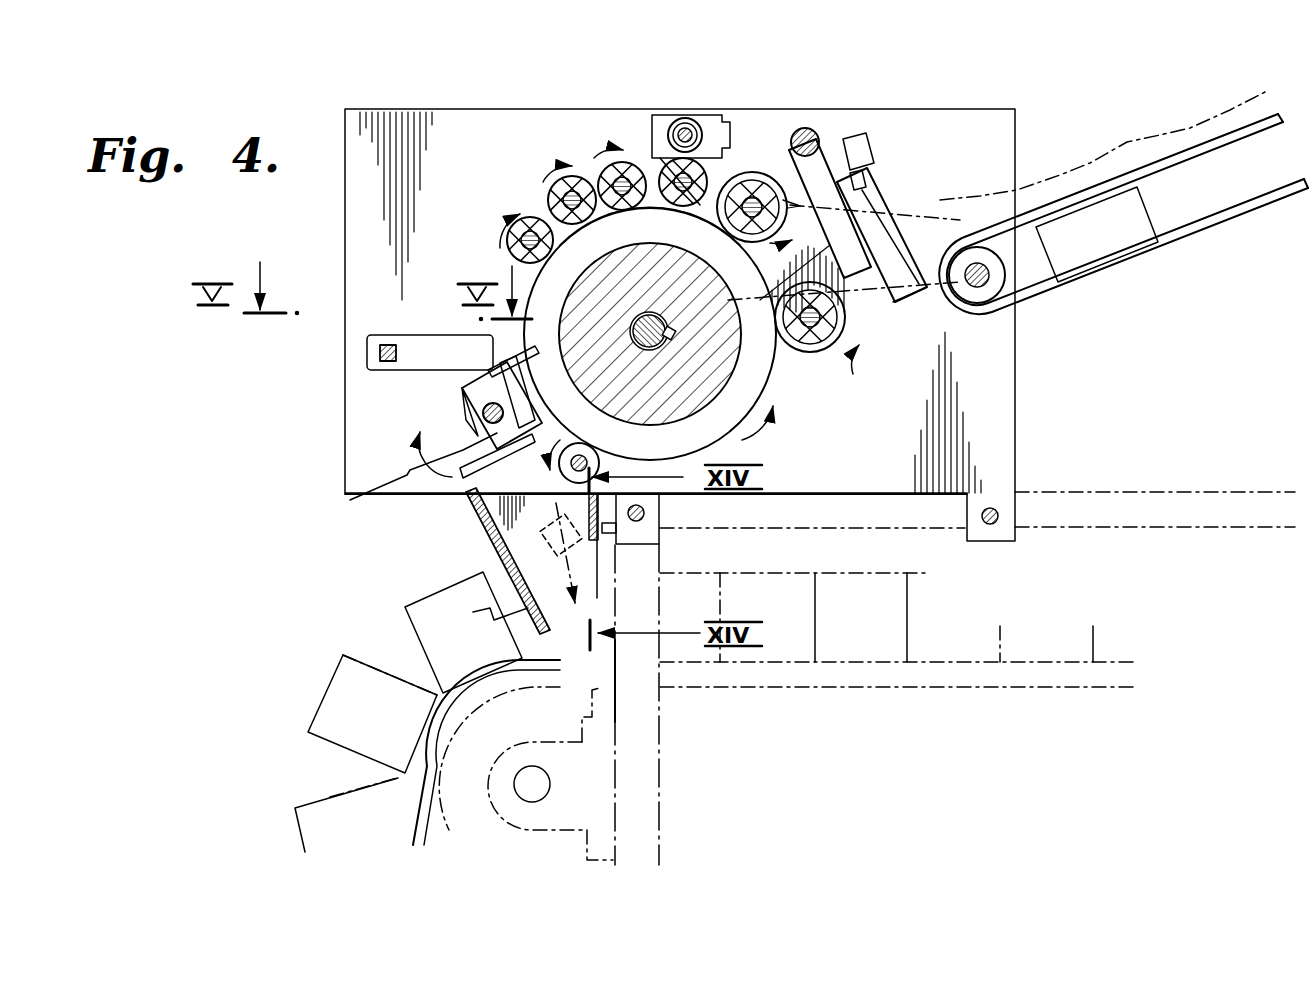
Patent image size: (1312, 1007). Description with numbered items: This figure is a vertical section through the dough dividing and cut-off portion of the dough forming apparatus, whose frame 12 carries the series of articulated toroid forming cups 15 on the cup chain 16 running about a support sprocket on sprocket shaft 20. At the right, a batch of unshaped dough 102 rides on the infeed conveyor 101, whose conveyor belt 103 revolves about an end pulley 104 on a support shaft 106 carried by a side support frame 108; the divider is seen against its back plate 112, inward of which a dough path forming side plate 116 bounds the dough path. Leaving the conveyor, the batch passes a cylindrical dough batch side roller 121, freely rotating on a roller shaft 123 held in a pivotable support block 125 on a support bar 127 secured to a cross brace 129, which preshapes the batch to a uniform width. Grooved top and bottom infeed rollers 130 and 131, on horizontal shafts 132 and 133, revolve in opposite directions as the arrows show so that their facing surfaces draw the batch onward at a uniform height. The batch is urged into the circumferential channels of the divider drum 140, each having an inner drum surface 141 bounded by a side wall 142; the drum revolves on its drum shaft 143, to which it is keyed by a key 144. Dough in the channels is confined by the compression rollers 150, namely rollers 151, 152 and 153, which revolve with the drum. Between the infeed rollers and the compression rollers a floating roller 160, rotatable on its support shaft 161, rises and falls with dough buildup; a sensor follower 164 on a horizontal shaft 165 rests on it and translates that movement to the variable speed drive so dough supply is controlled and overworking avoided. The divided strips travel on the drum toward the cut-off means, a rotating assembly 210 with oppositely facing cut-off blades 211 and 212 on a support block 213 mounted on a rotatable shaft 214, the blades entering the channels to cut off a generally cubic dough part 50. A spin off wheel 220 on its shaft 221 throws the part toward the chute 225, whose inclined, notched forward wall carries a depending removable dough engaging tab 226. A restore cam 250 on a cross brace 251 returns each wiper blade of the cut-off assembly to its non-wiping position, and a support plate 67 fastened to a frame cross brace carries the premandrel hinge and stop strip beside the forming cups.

The frame 12 is at (645, 802).
The articulated toroid forming segmented tubular cups 15 is at (345, 770).
The cup chain 16 is at (1037, 688).
The sprocket shaft 20 is at (520, 797).
The dough part 50 is at (543, 502).
The support plate 67 is at (634, 545).
The infeed conveyor 101 is at (1050, 186).
The dough batch 102 is at (1167, 135).
The conveyor belt 103 is at (1256, 204).
The pulley 104 is at (984, 288).
The support shaft 106 is at (1005, 290).
The side support frame 108 is at (1118, 222).
The back plate 112 is at (995, 450).
The dough path forming side plate 116 is at (862, 300).
The dough batch side roller 121 is at (926, 162).
The roller shaft 123 is at (870, 150).
The support block 125 is at (830, 125).
The support bar 127 is at (887, 203).
The cross brace 129 is at (812, 128).
The top infeed roller 130 is at (846, 320).
The bottom infeed roller 131 is at (756, 180).
The shaft 132 is at (834, 348).
The shaft 133 is at (752, 200).
The divider drum 140 is at (650, 387).
The inner drum surface 141 is at (742, 420).
The side wall 142 is at (735, 436).
The drum shaft 143 is at (640, 322).
The key 144 is at (672, 338).
The compression rollers 150 is at (468, 190).
The compression roller 151 is at (612, 168).
The compression roller 152 is at (548, 202).
The compression roller 153 is at (520, 262).
The floating roller 160 is at (702, 172).
The support shaft 161 is at (682, 214).
The sensor follower 164 is at (668, 132).
The horizontal shaft 165 is at (685, 128).
The rotating lay assembly 210 is at (405, 443).
The cut-off blade 211 is at (493, 342).
The cut-off blade 212 is at (452, 485).
The support block 213 is at (350, 500).
The rotatable shaft 214 is at (482, 412).
The spin off wheel 220 is at (598, 462).
The shaft 221 is at (582, 456).
The chute 225 is at (508, 565).
The dough engaging tab 226 is at (418, 642).
The restore cam 250 is at (368, 335).
The cross brace 251 is at (320, 362).